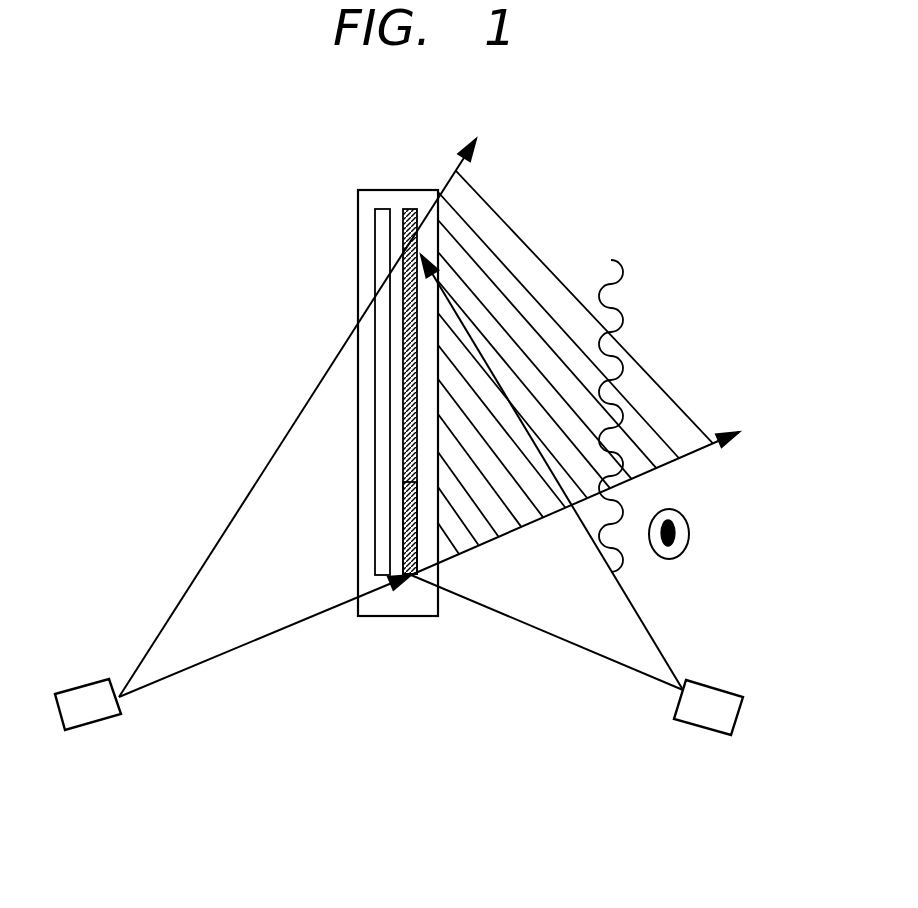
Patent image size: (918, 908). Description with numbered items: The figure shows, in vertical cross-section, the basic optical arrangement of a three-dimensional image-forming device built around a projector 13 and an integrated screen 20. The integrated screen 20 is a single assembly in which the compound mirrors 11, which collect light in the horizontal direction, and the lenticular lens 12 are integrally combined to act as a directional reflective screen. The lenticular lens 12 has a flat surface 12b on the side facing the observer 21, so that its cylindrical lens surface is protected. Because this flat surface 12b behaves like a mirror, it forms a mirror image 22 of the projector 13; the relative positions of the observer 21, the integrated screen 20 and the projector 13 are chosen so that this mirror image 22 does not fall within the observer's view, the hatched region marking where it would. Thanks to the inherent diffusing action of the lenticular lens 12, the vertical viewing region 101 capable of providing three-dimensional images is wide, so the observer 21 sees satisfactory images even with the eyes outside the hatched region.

The integrated screen 20 is at (379, 187).
The compound mirrors 11 is at (374, 330).
The lenticular lens 12 is at (418, 345).
The flat surface 12b is at (416, 495).
The mirror image 22 is at (75, 687).
The projector 13 is at (697, 728).
The observer 21 is at (688, 525).
The viewing region 101 is at (630, 287).